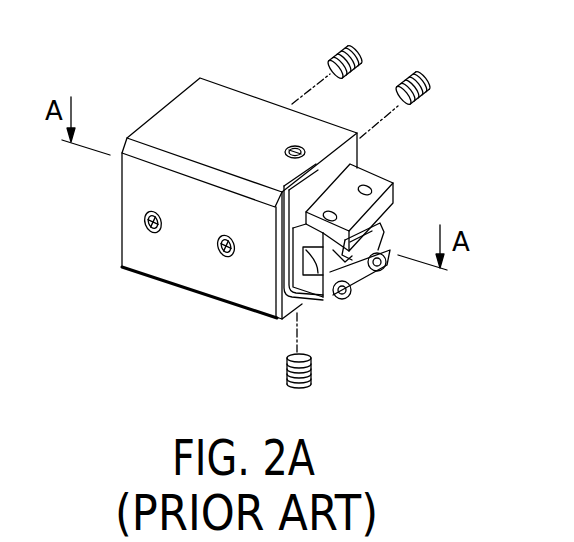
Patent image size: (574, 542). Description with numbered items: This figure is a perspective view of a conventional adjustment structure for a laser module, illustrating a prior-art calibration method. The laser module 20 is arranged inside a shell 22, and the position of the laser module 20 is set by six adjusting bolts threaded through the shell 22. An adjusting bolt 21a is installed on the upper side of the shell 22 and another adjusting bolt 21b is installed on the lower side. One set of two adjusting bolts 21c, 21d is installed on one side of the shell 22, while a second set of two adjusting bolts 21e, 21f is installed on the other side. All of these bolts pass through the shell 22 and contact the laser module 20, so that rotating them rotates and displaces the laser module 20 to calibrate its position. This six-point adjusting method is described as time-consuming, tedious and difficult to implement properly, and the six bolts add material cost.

The laser module 20 is at (380, 178).
The adjusting bolt 21a is at (290, 147).
The adjusting bolt 21b is at (313, 368).
The adjusting bolt 21c is at (360, 48).
The adjusting bolt 21d is at (428, 75).
The adjusting bolt 21e is at (147, 230).
The adjusting bolt 21f is at (218, 256).
The shell 22 is at (173, 105).